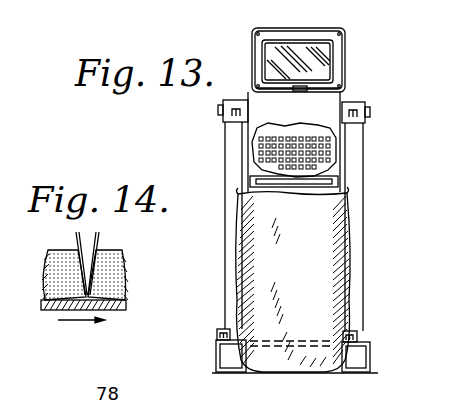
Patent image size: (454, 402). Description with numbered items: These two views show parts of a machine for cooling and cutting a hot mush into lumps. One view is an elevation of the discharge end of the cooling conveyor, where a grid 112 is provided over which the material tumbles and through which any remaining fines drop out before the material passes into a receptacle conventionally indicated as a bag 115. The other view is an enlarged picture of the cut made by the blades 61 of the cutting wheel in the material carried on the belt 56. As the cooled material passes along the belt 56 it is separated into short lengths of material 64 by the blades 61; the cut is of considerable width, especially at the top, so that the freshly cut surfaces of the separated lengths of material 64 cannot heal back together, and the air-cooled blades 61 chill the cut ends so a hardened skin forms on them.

In FIG. 13, the grid 112 is at (325, 150).
In FIG. 13, the bag 115 is at (318, 282).
In FIG. 14, the blades 61 is at (100, 240).
In FIG. 14, the separated lengths of material 64 is at (122, 287).
In FIG. 14, the belt 56 is at (52, 301).